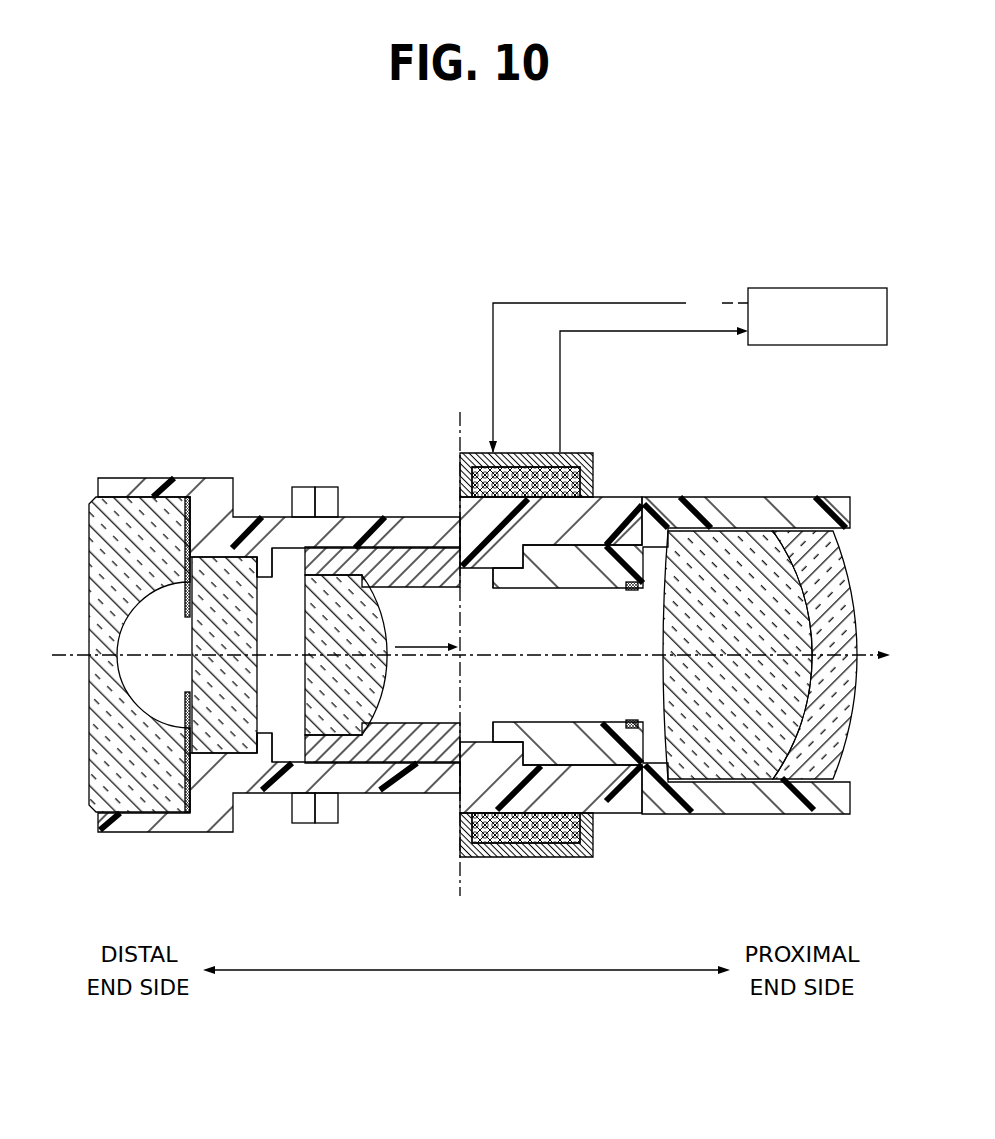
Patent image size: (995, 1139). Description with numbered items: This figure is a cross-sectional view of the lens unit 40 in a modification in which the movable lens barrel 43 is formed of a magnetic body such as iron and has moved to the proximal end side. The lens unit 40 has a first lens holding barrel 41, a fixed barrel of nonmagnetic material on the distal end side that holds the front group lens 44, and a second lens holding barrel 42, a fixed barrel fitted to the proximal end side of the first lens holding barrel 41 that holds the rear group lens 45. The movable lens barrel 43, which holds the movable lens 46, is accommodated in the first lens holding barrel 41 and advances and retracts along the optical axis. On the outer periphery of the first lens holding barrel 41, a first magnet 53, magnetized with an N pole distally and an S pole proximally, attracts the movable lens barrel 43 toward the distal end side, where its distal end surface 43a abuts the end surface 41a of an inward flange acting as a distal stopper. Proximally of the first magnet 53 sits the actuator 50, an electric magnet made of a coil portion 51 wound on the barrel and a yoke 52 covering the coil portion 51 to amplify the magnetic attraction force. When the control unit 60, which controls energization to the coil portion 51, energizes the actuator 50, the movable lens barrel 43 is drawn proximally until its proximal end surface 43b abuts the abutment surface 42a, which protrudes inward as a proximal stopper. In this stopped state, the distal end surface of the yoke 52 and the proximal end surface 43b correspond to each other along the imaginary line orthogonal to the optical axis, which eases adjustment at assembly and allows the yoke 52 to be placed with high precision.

The lens unit 40 is at (458, 624).
The first lens holding barrel 41 is at (166, 478).
The end surface 41a is at (273, 752).
The second lens holding barrel 42 is at (735, 497).
The abutment surface 42a is at (457, 747).
The movable lens barrel 43 is at (370, 517).
The distal end surface 43a is at (262, 757).
The proximal end surface 43b is at (493, 742).
The front group lens 44 is at (160, 700).
The rear group lens 45 is at (693, 697).
The movable lens 46 is at (384, 682).
The actuator 50 is at (526, 610).
The coil portion 51 is at (571, 432).
The yoke 52 is at (509, 452).
The first magnet 53 is at (316, 487).
The control unit 60 is at (822, 288).